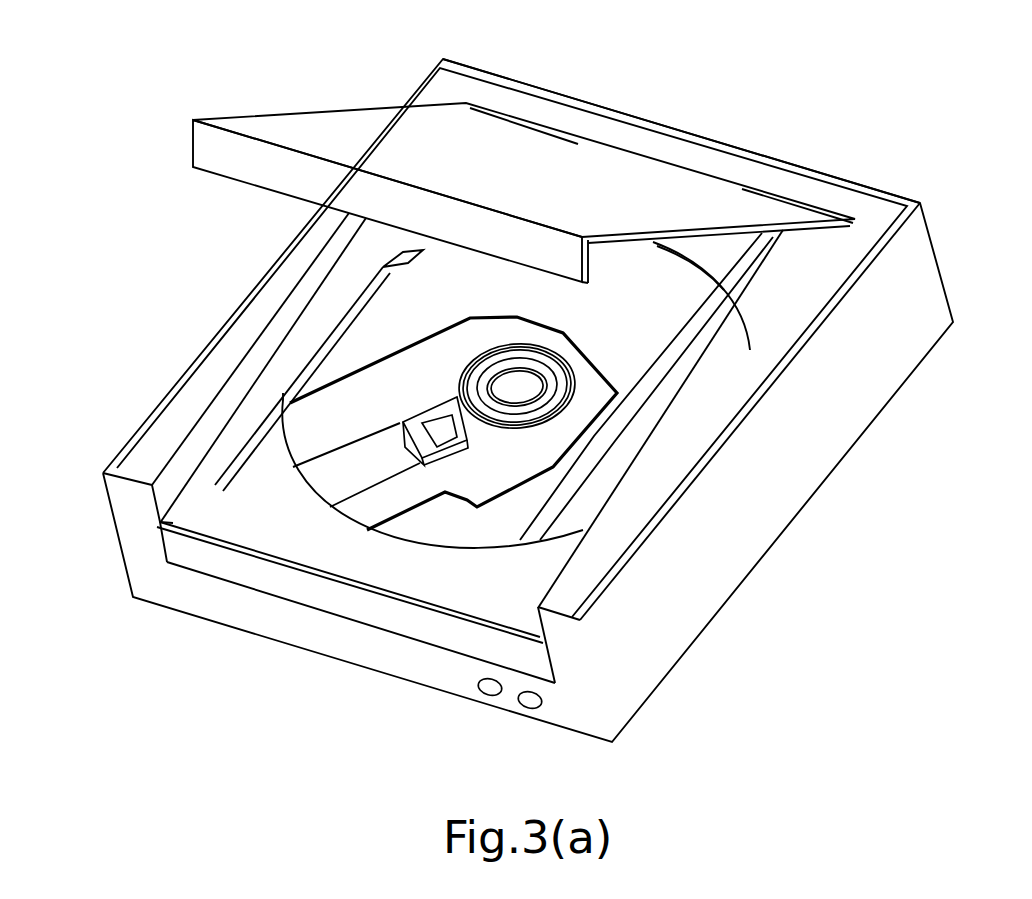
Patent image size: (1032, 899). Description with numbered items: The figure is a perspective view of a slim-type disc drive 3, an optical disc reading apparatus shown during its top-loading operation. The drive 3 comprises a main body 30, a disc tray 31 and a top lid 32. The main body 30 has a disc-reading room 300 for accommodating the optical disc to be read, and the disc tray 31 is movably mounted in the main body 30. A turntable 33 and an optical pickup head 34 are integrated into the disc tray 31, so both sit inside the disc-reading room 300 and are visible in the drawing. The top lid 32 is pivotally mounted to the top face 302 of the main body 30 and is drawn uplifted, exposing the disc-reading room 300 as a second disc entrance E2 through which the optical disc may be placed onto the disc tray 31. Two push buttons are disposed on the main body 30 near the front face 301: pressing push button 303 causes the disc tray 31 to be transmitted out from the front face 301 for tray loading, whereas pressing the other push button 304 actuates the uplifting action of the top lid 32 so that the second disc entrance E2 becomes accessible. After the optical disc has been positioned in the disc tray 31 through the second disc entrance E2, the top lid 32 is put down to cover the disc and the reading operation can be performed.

The slim-type disc drive 3 is at (850, 62).
The main body 30 is at (705, 585).
The disc-reading room 300 is at (667, 327).
The front face 301 is at (250, 610).
The top face 302 is at (875, 217).
The push button 303 is at (487, 682).
The push button 304 is at (527, 698).
The disc tray 31 is at (392, 612).
The top lid 32 is at (355, 140).
The turntable 33 is at (517, 388).
The optical pickup head 34 is at (440, 424).
The second disc entrance E2 is at (237, 503).